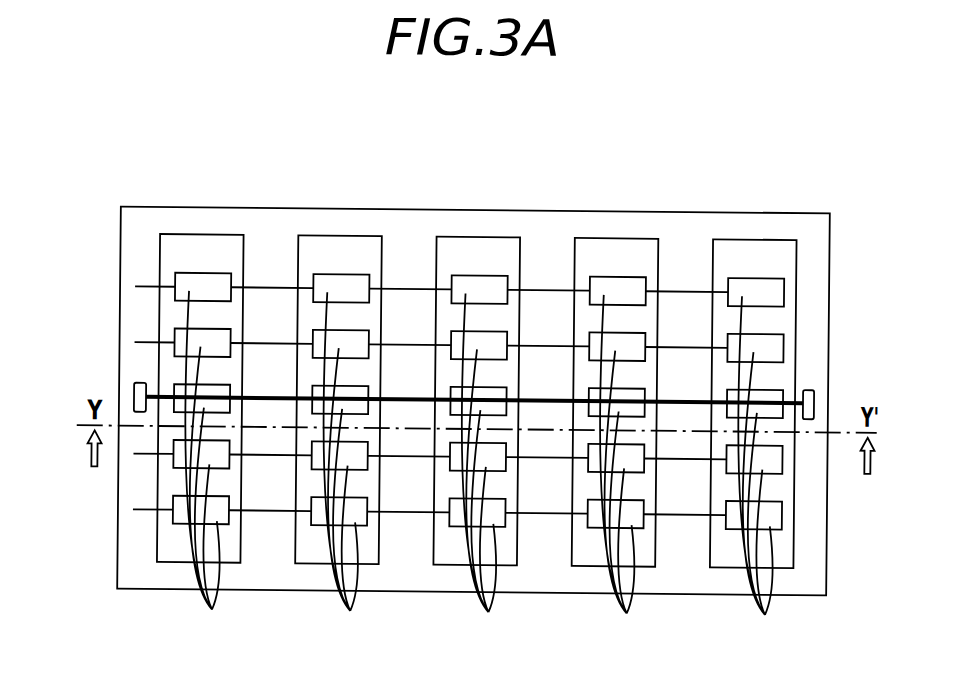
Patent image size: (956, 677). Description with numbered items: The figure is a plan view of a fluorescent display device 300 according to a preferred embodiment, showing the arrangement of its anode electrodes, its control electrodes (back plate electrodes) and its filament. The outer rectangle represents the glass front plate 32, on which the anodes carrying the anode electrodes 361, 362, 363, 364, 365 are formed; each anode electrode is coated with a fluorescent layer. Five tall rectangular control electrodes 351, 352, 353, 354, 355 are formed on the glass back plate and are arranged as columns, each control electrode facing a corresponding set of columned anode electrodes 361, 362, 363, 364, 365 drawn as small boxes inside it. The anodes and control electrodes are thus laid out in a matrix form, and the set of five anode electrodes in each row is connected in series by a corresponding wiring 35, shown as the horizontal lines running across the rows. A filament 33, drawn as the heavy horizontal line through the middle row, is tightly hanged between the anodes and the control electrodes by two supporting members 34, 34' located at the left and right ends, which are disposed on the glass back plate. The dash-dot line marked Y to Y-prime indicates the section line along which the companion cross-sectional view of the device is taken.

The fluorescent display device 300 is at (562, 106).
The glass front plate 32 is at (785, 224).
The filament 33 is at (787, 403).
The supporting member 34 is at (847, 389).
The supporting member 34' is at (100, 381).
The wiring 35 is at (139, 345).
The control electrode 351 is at (202, 240).
The control electrode 352 is at (340, 240).
The control electrode 353 is at (478, 240).
The control electrode 354 is at (616, 240).
The control electrode 355 is at (754, 240).
The anode electrode 361 is at (209, 468).
The anode electrode 362 is at (347, 469).
The anode electrode 363 is at (485, 470).
The anode electrode 364 is at (623, 472).
The anode electrode 365 is at (761, 473).